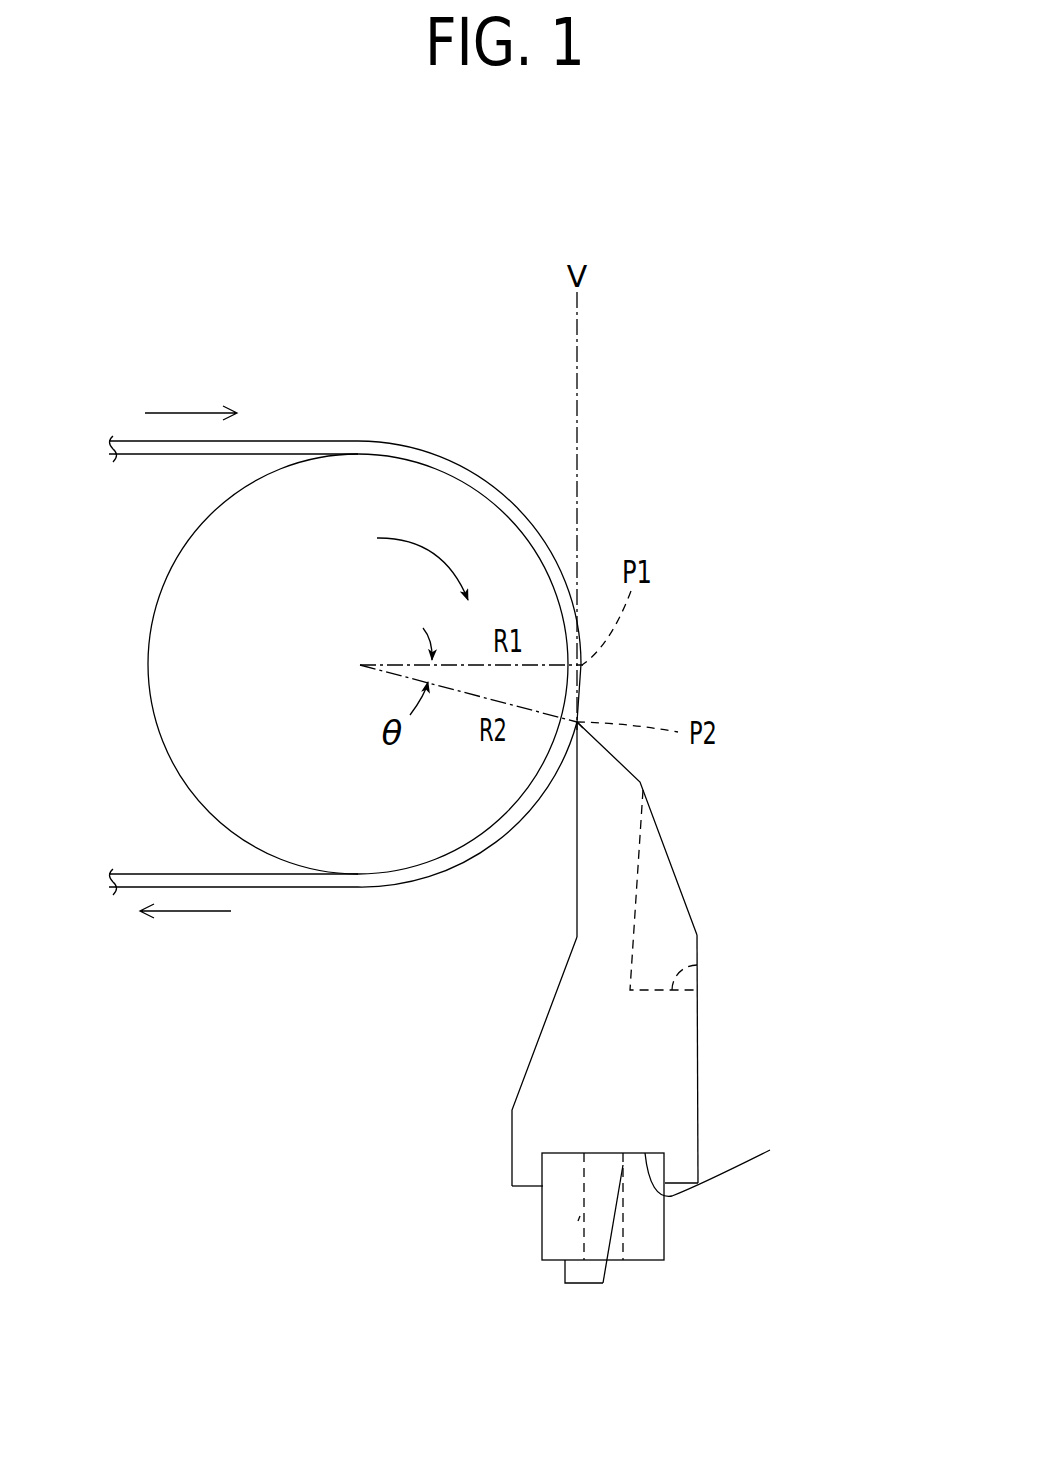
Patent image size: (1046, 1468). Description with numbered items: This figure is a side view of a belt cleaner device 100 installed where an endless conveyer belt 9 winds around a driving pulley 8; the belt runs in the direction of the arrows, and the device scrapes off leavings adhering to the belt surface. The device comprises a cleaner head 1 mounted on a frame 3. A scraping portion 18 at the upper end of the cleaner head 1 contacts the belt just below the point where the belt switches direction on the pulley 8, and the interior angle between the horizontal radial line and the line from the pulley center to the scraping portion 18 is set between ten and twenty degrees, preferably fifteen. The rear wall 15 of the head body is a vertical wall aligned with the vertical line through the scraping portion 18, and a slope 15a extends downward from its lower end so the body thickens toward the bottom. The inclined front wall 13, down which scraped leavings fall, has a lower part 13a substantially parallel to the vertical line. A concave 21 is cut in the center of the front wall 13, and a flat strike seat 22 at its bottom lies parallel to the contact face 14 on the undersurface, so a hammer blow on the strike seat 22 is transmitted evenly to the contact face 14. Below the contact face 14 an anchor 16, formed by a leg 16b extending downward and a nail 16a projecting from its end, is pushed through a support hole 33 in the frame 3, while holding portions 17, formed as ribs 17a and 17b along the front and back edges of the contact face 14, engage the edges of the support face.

The belt cleaner device 100 is at (772, 718).
The driving pulley 8 is at (184, 662).
The conveyer belt 9 is at (311, 888).
The cleaner head 1 is at (683, 812).
The scraping portion 18 is at (577, 722).
The rear wall 15 is at (577, 897).
The slope 15a is at (535, 1043).
The front wall 13 is at (678, 875).
The lower part of the front wall 13a is at (698, 1033).
The concave 21 is at (670, 912).
The strike seat 22 is at (698, 957).
The holding portions 17 is at (599, 1155).
The rib 17a is at (700, 1177).
The rib 17b is at (512, 1180).
The contact face 14 is at (726, 1157).
The frame 3 is at (665, 1211).
The anchor 16 is at (607, 1267).
The nail 16a is at (582, 1283).
The leg 16b is at (627, 1262).
The support hole 33 is at (580, 1218).